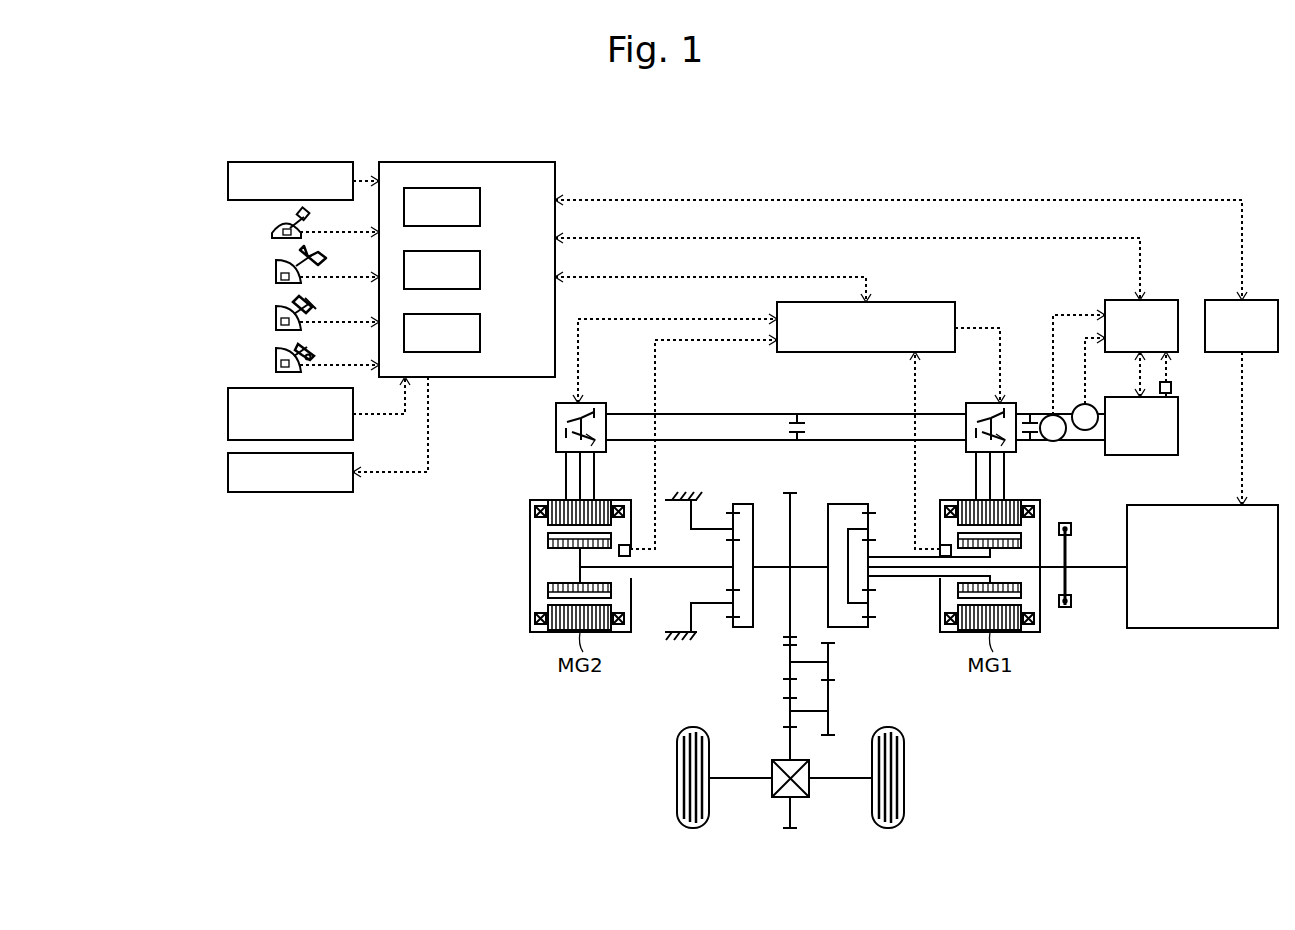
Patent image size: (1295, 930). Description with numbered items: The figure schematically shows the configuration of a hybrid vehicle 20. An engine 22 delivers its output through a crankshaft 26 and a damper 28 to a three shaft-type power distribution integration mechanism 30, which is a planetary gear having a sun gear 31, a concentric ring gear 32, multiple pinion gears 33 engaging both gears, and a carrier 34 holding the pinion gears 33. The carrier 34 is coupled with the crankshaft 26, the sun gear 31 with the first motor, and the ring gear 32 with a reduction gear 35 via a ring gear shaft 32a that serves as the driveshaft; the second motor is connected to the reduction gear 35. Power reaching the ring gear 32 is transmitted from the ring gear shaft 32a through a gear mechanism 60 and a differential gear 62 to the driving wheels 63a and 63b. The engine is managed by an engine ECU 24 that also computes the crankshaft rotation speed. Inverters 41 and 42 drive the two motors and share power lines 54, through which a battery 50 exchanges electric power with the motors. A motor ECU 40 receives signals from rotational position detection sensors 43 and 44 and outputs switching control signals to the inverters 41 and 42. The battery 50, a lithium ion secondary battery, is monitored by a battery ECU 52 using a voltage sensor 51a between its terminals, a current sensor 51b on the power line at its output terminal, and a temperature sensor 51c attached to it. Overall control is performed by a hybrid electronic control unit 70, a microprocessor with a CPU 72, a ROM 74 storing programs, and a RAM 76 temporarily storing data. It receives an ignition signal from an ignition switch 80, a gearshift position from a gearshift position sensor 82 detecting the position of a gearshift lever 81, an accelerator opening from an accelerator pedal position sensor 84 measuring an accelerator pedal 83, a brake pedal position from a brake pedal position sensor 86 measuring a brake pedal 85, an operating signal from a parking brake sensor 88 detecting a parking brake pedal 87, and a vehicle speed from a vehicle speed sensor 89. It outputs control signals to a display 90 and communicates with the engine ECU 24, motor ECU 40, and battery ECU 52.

The hybrid vehicle 20 is at (1028, 138).
The engine 22 is at (1202, 628).
The engine ECU 24 is at (1264, 300).
The crankshaft 26 is at (1115, 568).
The damper 28 is at (1066, 607).
The power distribution integration mechanism 30 is at (877, 490).
The sun gear 31 is at (873, 576).
The ring gear 32 is at (873, 620).
The ring gear shaft 32a is at (804, 545).
The pinion gears 33 is at (873, 598).
The carrier 34 is at (848, 530).
The reduction gear 35 is at (748, 490).
The motor ECU 40 is at (896, 302).
The inverter 41 is at (1006, 403).
The inverter 42 is at (593, 403).
The rotational position detection sensor 43 is at (945, 545).
The rotational position detection sensor 44 is at (626, 545).
The battery 50 is at (1140, 455).
The voltage sensor 51a is at (1053, 441).
The current sensor 51b is at (1085, 430).
The temperature sensor 51c is at (1171, 387).
The battery ECU 52 is at (1165, 300).
The power lines 54 is at (857, 440).
The gear mechanism 60 is at (848, 695).
The differential gear 62 is at (810, 790).
The driving wheel 63a is at (677, 778).
The driving wheel 63b is at (904, 778).
The hybrid electronic control unit 70 is at (468, 162).
The CPU 72 is at (482, 207).
The ROM 74 is at (482, 270).
The RAM 76 is at (482, 333).
The ignition switch 80 is at (228, 178).
The gearshift lever 81 is at (298, 215).
The gearshift position sensor 82 is at (272, 234).
The accelerator pedal 83 is at (300, 258).
The accelerator pedal position sensor 84 is at (276, 278).
The brake pedal 85 is at (298, 304).
The brake pedal position sensor 86 is at (276, 324).
The parking brake pedal 87 is at (296, 348).
The parking brake sensor 88 is at (276, 367).
The vehicle speed sensor 89 is at (228, 412).
The display 90 is at (228, 469).